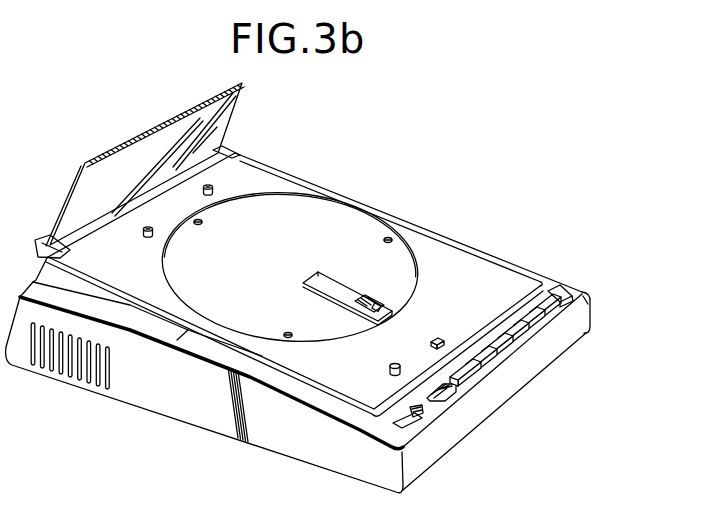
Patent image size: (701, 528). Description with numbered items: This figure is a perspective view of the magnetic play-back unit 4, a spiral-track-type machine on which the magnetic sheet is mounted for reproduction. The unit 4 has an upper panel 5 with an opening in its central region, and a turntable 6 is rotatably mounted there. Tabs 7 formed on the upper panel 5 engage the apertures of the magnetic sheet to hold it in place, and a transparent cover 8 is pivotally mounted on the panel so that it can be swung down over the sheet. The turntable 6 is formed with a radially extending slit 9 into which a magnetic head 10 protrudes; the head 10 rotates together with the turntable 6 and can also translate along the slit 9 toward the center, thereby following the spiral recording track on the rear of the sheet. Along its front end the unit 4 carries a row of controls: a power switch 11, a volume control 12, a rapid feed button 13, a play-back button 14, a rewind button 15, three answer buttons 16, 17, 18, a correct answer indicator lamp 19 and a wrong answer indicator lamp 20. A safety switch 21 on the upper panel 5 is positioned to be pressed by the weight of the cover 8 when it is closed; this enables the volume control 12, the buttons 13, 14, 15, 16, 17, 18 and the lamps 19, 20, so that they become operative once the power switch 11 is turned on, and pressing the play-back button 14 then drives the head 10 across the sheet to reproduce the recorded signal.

The magnetic play-back unit 4 is at (413, 222).
The upper panel 5 is at (237, 153).
The turntable 6 is at (368, 214).
The tabs 7 is at (214, 190).
The transparent cover 8 is at (131, 139).
The slit 9 is at (322, 292).
The magnetic head 10 is at (380, 302).
The power switch 11 is at (417, 416).
The volume control 12 is at (445, 398).
The rapid feed button 13 is at (470, 386).
The play-back button 14 is at (485, 372).
The rewind button 15 is at (500, 358).
The answer button 16 is at (516, 345).
The answer button 17 is at (531, 332).
The answer button 18 is at (547, 318).
The correct answer indicator lamp 19 is at (584, 308).
The wrong answer indicator lamp 20 is at (562, 292).
The safety switch 21 is at (389, 369).